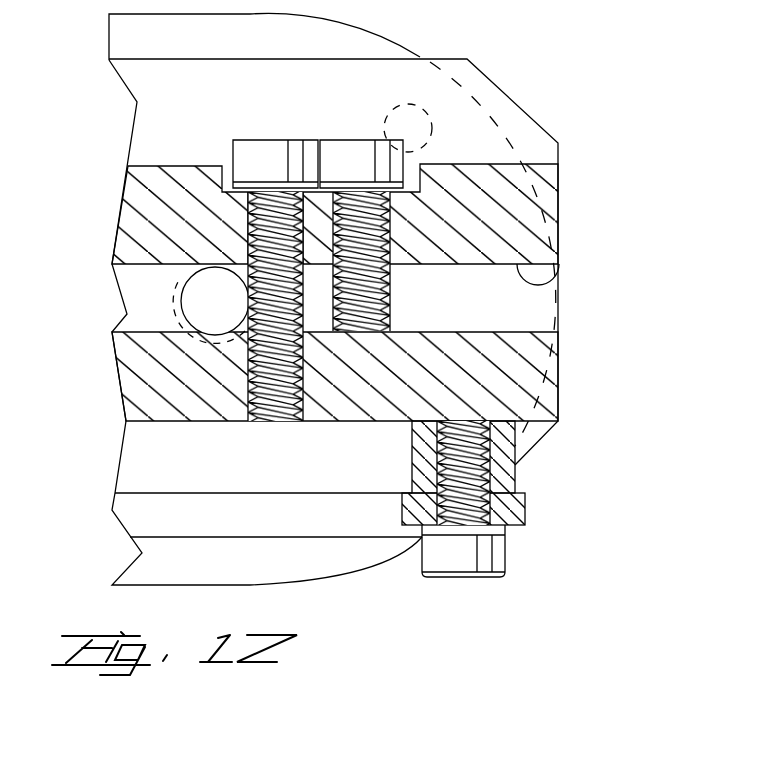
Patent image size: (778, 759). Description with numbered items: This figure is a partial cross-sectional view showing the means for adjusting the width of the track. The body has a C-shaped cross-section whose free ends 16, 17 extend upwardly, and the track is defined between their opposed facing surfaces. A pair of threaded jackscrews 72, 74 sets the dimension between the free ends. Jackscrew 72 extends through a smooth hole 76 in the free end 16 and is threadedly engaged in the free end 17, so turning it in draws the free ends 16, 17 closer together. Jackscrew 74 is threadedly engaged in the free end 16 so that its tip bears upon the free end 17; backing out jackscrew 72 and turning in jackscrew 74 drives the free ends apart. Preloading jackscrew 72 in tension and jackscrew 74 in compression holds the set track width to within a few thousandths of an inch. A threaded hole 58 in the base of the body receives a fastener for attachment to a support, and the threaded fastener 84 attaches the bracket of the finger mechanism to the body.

The free end 16 is at (545, 284).
The free end 17 is at (503, 332).
The threaded hole 58 is at (183, 290).
The jackscrew 72 is at (265, 158).
The jackscrew 74 is at (358, 157).
The smooth hole 76 is at (250, 240).
The threaded fastener 84 is at (500, 553).